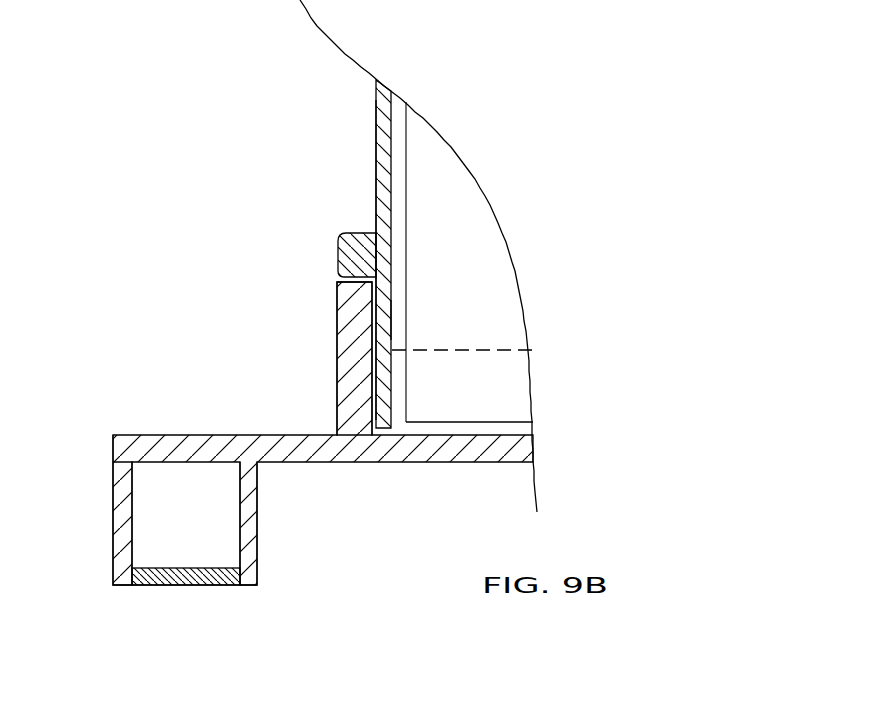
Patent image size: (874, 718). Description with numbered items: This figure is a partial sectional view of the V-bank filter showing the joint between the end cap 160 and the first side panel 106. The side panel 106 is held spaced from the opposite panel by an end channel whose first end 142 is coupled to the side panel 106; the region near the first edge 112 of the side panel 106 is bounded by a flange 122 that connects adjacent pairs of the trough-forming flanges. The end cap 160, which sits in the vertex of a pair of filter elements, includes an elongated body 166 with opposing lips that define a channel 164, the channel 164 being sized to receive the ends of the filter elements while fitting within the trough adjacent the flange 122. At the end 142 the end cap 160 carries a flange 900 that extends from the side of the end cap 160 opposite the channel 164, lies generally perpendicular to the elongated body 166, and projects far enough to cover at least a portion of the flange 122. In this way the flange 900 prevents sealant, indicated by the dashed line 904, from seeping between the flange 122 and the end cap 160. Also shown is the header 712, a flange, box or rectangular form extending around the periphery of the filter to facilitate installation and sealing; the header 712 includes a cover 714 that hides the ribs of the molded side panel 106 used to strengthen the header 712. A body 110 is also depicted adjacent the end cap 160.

The side panel 106 is at (154, 434).
The cover body 110 is at (462, 247).
The first edge 112 is at (113, 483).
The flange 122 is at (347, 322).
The first end 142 is at (404, 320).
The end cap 160 is at (363, 130).
The channel 164 is at (412, 172).
The elongated body 166 is at (383, 168).
The header 712 is at (258, 513).
The cover 714 is at (163, 567).
The flange 900 is at (338, 246).
The sealant 904 is at (494, 338).